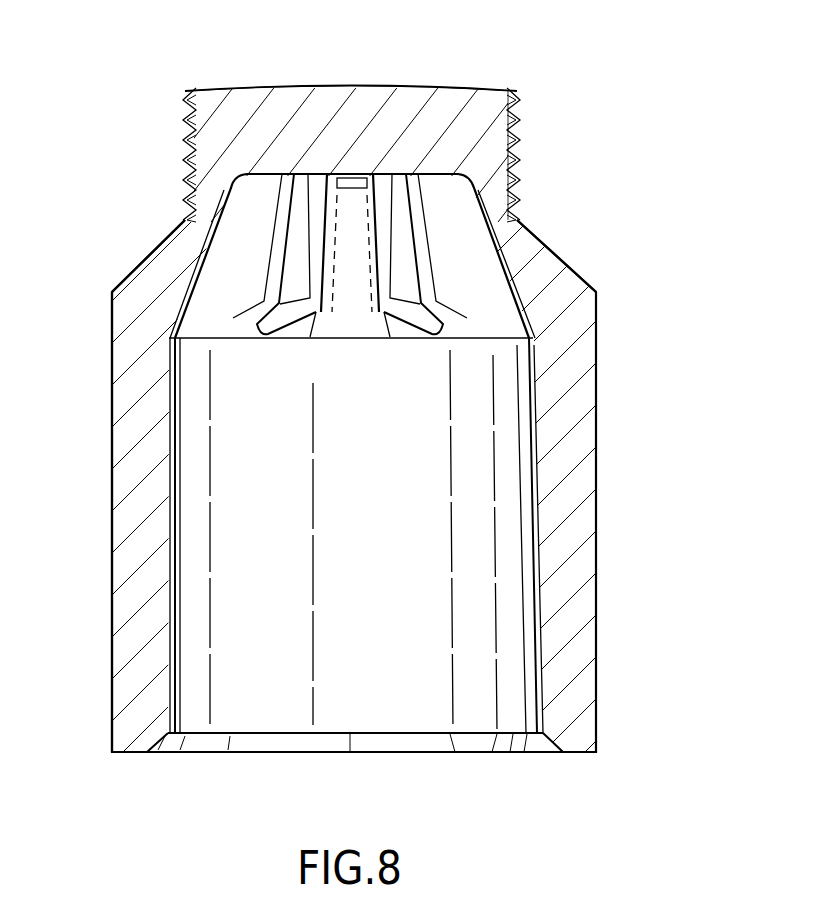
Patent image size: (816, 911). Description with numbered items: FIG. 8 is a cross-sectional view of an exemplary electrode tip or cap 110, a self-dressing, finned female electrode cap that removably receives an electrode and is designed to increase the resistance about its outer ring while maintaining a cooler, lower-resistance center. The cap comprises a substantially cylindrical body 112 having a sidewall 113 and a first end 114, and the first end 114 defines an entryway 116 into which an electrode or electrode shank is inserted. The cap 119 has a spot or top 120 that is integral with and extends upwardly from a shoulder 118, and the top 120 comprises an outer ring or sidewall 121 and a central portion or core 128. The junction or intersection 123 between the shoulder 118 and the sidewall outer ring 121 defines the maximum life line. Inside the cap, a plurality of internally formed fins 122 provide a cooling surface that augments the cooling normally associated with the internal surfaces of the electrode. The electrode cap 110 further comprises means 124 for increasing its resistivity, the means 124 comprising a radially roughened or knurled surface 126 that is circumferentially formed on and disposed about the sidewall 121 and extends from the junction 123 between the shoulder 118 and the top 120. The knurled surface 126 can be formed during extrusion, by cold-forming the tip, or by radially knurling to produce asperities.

The electrode tip or cap 110 is at (640, 489).
The cylindrical body 112 is at (581, 403).
The sidewall 113 is at (127, 640).
The first end 114 is at (581, 752).
The entryway 116 is at (516, 735).
The shoulder 118 is at (559, 260).
The cap 119 is at (262, 87).
The spot or top 120 is at (480, 72).
The outer ring or sidewall 121 is at (520, 124).
The internally formed fins 122 is at (233, 320).
The junction or intersection 123 is at (186, 221).
The means for increasing resistivity 124 is at (568, 172).
The knurled surface 126 is at (183, 150).
The central portion or core 128 is at (351, 86).